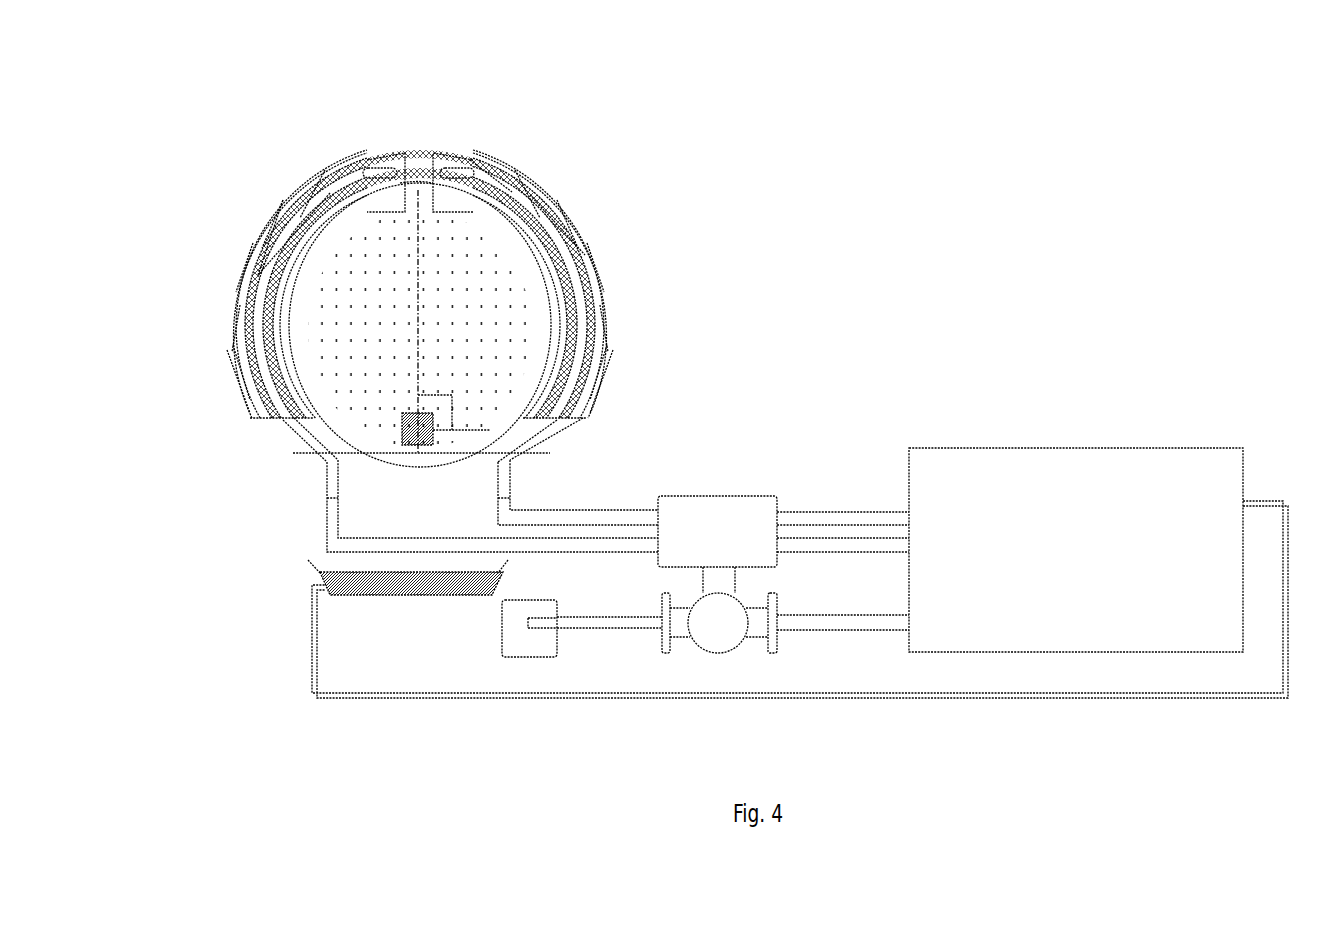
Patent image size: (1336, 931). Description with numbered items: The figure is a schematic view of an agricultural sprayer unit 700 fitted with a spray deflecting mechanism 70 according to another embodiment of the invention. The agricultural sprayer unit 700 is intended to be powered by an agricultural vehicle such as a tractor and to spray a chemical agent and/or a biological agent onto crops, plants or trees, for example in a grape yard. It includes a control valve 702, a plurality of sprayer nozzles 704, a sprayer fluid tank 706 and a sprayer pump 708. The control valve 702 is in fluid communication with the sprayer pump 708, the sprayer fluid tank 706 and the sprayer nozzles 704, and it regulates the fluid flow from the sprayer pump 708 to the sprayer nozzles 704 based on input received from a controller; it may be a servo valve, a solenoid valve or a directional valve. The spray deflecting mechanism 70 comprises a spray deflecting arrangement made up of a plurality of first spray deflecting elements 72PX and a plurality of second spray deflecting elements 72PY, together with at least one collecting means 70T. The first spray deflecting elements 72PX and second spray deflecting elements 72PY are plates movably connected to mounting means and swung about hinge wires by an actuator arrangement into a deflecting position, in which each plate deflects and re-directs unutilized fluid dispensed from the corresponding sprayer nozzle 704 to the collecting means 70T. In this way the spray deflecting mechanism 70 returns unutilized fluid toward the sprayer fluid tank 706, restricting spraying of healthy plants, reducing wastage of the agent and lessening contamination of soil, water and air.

The agricultural sprayer unit 700 is at (700, 407).
The spray deflecting mechanism 70 is at (674, 312).
The first spray deflecting elements 72PX is at (370, 160).
The second spray deflecting elements 72PY is at (585, 310).
The sprayer nozzles 704 is at (270, 310).
The control valve 702 is at (717, 517).
The sprayer fluid tank 706 is at (1058, 483).
The sprayer pump 708 is at (722, 618).
The collecting means 70T is at (390, 585).